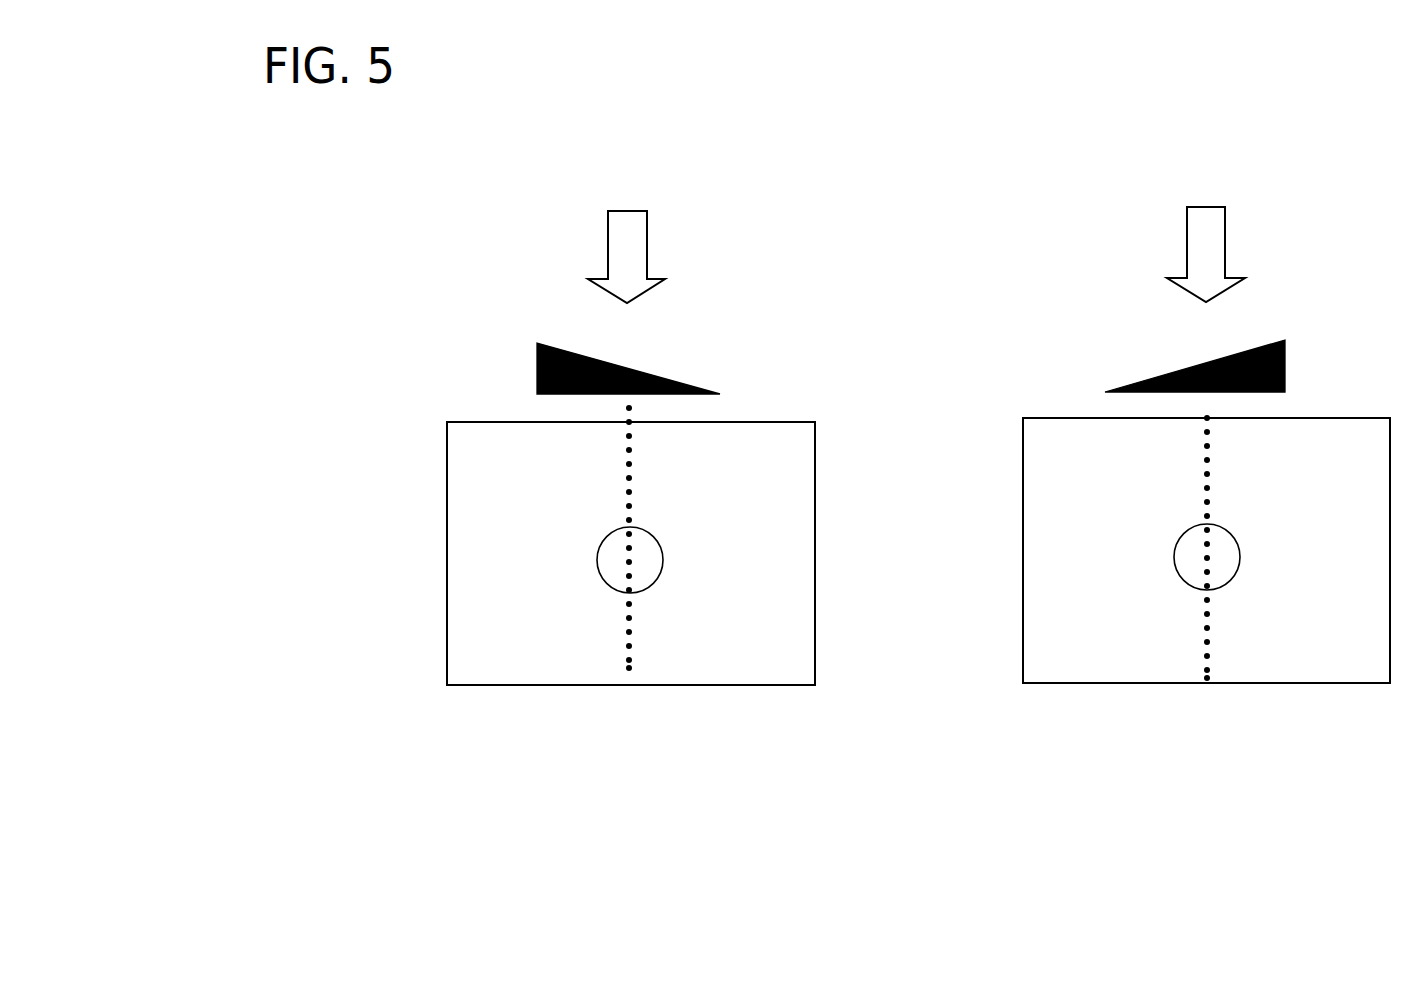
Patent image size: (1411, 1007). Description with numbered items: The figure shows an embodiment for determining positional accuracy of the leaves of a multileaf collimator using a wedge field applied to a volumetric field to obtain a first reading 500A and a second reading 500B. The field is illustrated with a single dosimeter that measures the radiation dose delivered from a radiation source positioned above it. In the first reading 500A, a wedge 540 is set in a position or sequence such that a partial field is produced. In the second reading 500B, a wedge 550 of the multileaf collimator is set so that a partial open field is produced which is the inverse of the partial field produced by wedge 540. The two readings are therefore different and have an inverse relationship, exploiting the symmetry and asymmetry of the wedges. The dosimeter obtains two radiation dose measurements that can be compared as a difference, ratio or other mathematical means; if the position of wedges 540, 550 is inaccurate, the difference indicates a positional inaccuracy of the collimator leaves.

The first reading 500A is at (454, 776).
The second reading 500B is at (1024, 774).
The wedge 540 is at (537, 368).
The wedge 550 is at (1285, 364).